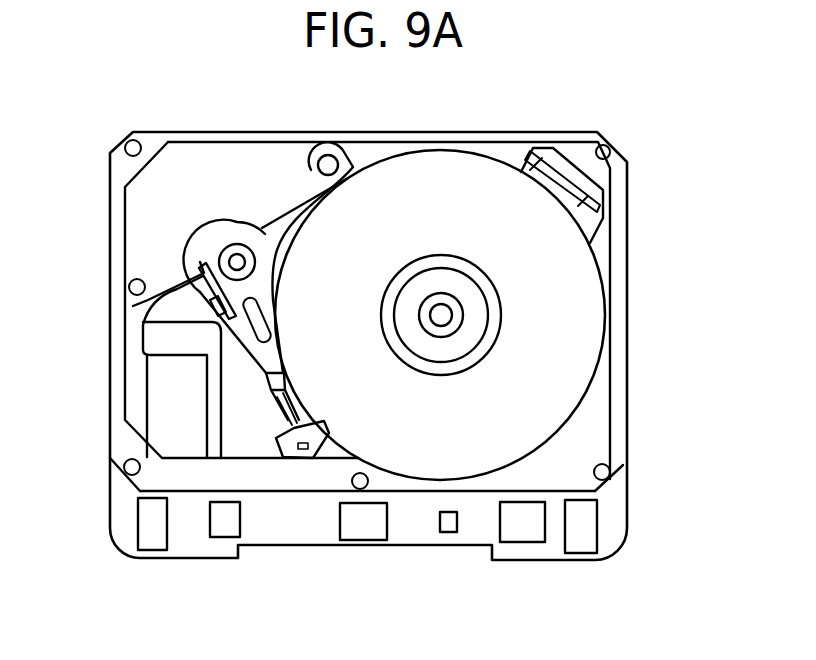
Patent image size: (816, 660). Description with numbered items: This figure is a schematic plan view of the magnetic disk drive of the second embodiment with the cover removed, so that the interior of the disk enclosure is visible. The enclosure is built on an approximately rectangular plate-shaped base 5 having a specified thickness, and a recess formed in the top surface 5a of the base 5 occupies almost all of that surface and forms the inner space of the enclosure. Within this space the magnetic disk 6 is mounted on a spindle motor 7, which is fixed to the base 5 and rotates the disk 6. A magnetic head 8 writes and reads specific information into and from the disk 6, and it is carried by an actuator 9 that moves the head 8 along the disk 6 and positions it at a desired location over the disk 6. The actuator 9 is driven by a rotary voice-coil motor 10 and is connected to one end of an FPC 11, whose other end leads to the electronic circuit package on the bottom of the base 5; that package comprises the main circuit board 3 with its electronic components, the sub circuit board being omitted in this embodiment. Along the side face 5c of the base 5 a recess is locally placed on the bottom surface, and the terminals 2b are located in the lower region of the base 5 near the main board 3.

The connector terminals 2b is at (360, 533).
The main circuit board 3 is at (613, 527).
The base 5 is at (632, 242).
The top surface of the base 5a is at (613, 402).
The side face of the base 5c is at (147, 498).
The magnetic disk 6 is at (598, 318).
The spindle motor 7 is at (445, 310).
The magnetic head 8 is at (288, 411).
The actuator 9 is at (257, 276).
The rotary voice-coil motor 10 is at (146, 238).
The FPC 11 is at (143, 313).